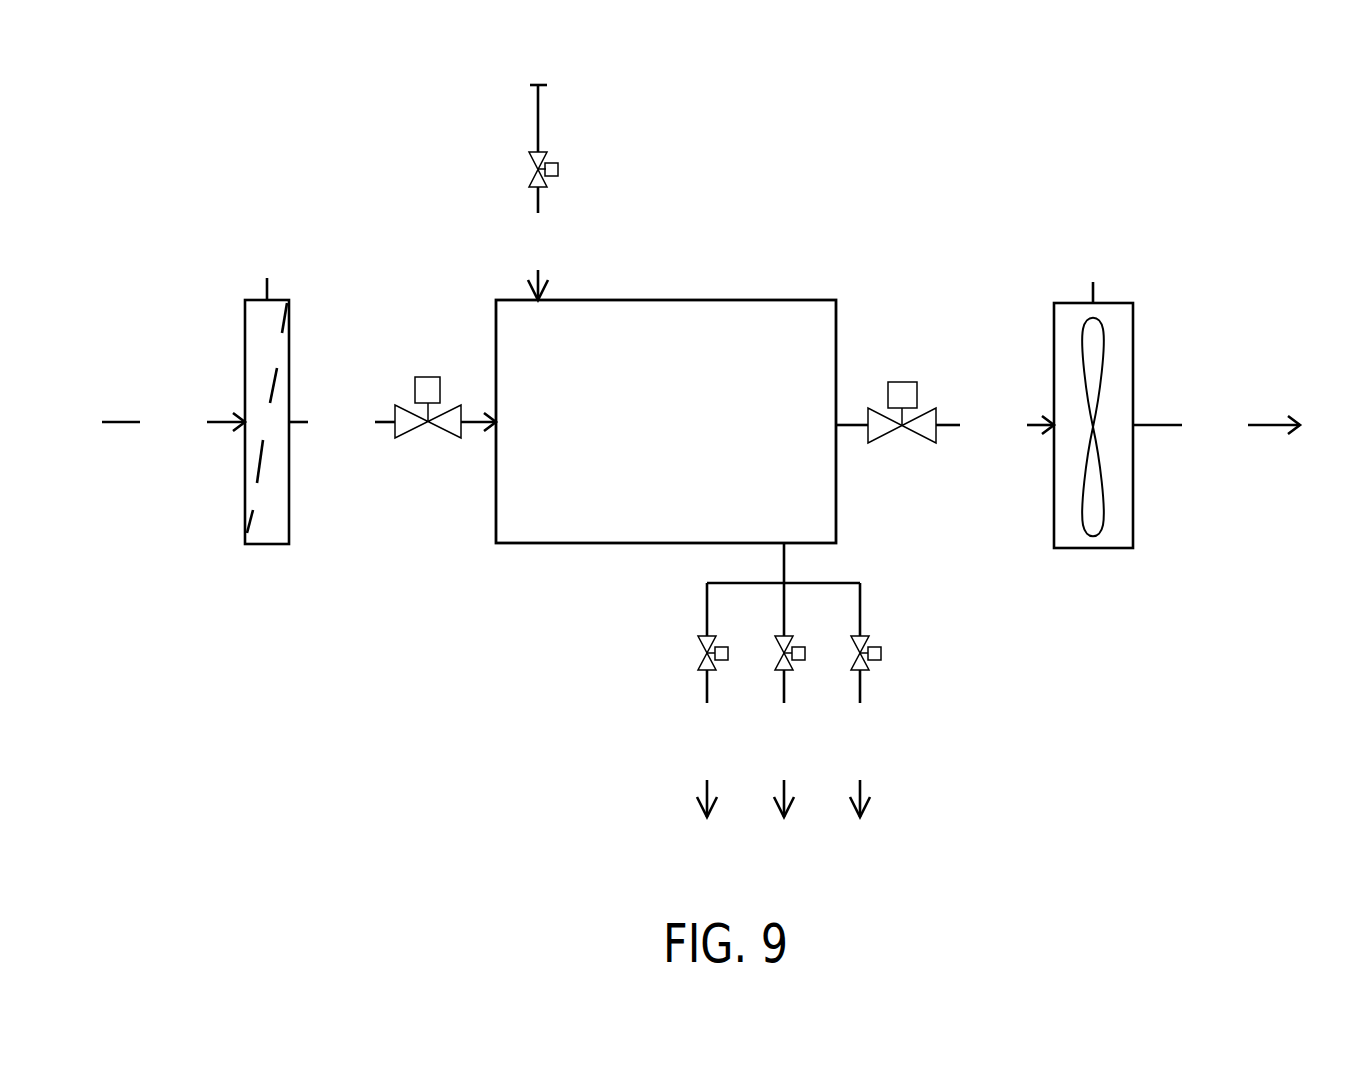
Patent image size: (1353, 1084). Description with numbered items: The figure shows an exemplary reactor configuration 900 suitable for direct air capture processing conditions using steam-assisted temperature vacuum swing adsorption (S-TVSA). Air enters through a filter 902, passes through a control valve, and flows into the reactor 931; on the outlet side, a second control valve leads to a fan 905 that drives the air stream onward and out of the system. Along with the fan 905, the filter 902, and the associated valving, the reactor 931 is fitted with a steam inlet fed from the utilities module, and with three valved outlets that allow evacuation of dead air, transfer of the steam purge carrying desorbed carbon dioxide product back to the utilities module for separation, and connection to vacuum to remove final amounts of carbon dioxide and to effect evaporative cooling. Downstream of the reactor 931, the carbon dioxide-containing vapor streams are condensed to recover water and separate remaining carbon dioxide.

The reactor configuration 900 is at (936, 151).
The filter 902 is at (259, 466).
The reactor 931 is at (666, 421).
The fan 905 is at (1093, 467).